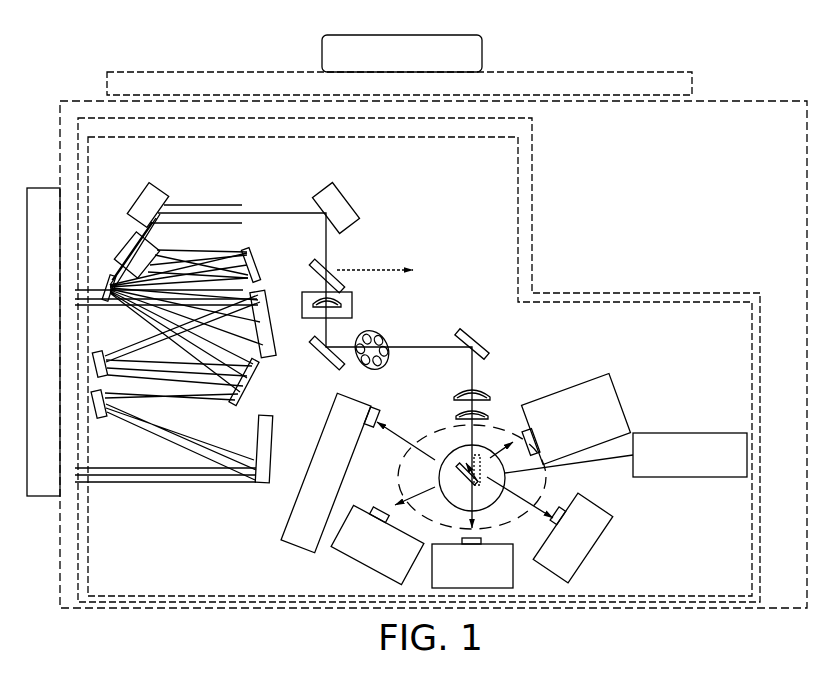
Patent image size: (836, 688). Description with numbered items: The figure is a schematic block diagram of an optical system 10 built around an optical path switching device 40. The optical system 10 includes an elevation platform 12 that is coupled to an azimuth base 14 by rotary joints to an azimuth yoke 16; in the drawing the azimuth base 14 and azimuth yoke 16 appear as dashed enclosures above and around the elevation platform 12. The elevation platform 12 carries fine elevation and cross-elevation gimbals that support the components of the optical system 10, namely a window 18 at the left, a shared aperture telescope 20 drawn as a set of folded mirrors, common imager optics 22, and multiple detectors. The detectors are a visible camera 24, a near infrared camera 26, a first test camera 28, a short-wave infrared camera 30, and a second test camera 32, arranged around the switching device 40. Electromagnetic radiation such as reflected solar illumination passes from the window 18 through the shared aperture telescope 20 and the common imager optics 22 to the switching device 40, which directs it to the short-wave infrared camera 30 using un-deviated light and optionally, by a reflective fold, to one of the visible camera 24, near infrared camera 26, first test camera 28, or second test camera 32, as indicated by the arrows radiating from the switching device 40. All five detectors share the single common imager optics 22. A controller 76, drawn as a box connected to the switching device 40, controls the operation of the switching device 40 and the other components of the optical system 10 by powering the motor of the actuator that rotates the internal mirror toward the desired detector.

The optical system 10 is at (90, 62).
The elevation platform 12 is at (59, 117).
The azimuth base 14 is at (447, 33).
The azimuth yoke 16 is at (648, 72).
The window 18 is at (27, 338).
The shared aperture telescope 20 is at (233, 285).
The common imager optics 22 is at (352, 295).
The visible (VIS) camera 24 is at (620, 397).
The near infrared (NIR) camera 26 is at (320, 440).
The first test camera 28 is at (608, 530).
The short-wave infrared (SWIR) camera 30 is at (498, 545).
The second test camera 32 is at (345, 550).
The optical path switching device 40 is at (450, 448).
The controller 76 is at (692, 432).